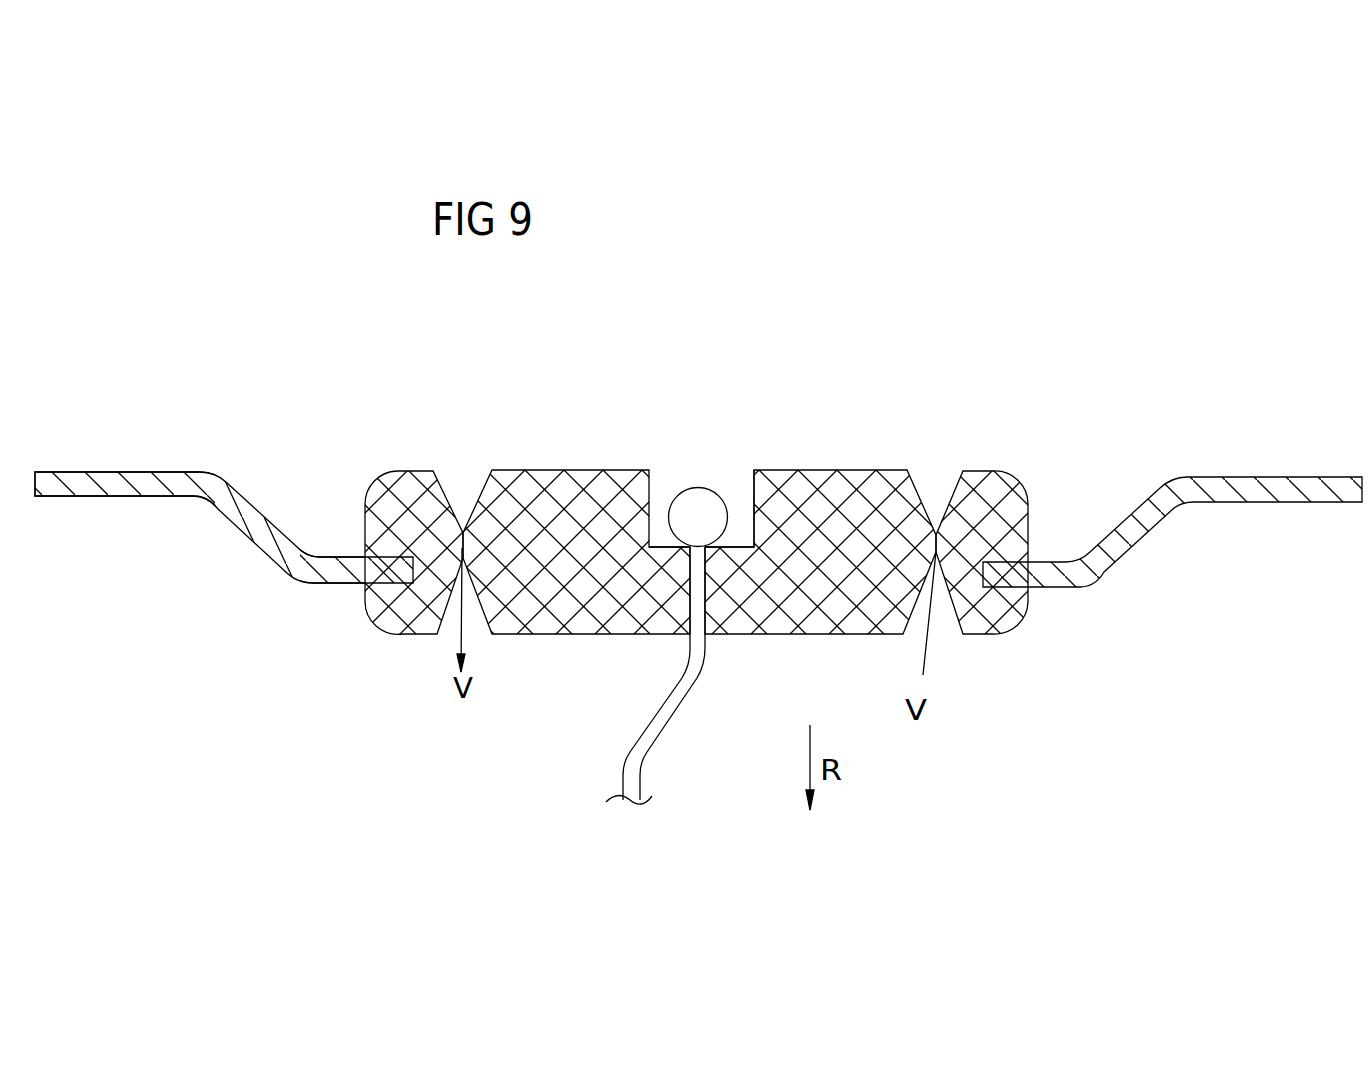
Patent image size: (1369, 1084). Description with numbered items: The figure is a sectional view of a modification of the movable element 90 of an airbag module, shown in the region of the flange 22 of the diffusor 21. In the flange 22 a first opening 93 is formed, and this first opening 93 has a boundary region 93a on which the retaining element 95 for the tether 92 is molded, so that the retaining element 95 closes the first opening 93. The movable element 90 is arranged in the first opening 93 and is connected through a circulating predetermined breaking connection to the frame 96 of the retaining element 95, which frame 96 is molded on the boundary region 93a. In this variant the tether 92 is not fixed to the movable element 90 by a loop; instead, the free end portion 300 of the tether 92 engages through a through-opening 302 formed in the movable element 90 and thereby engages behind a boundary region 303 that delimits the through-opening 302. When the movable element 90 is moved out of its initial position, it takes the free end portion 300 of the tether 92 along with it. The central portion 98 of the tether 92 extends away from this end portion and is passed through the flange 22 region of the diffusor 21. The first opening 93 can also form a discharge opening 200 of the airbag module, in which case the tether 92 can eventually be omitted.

The diffusor 21 is at (1308, 488).
The flange 22 is at (1251, 490).
The movable element 90 is at (840, 487).
The tether 92 is at (693, 660).
The first opening 93 is at (522, 577).
The boundary region 93a is at (392, 572).
The retaining element 95 is at (1002, 458).
The frame 96 is at (400, 488).
The central portion 98 is at (660, 710).
The discharge opening 200 is at (551, 583).
The free end portion 300 is at (695, 518).
The through-opening 302 is at (695, 578).
The boundary region 303 is at (733, 545).